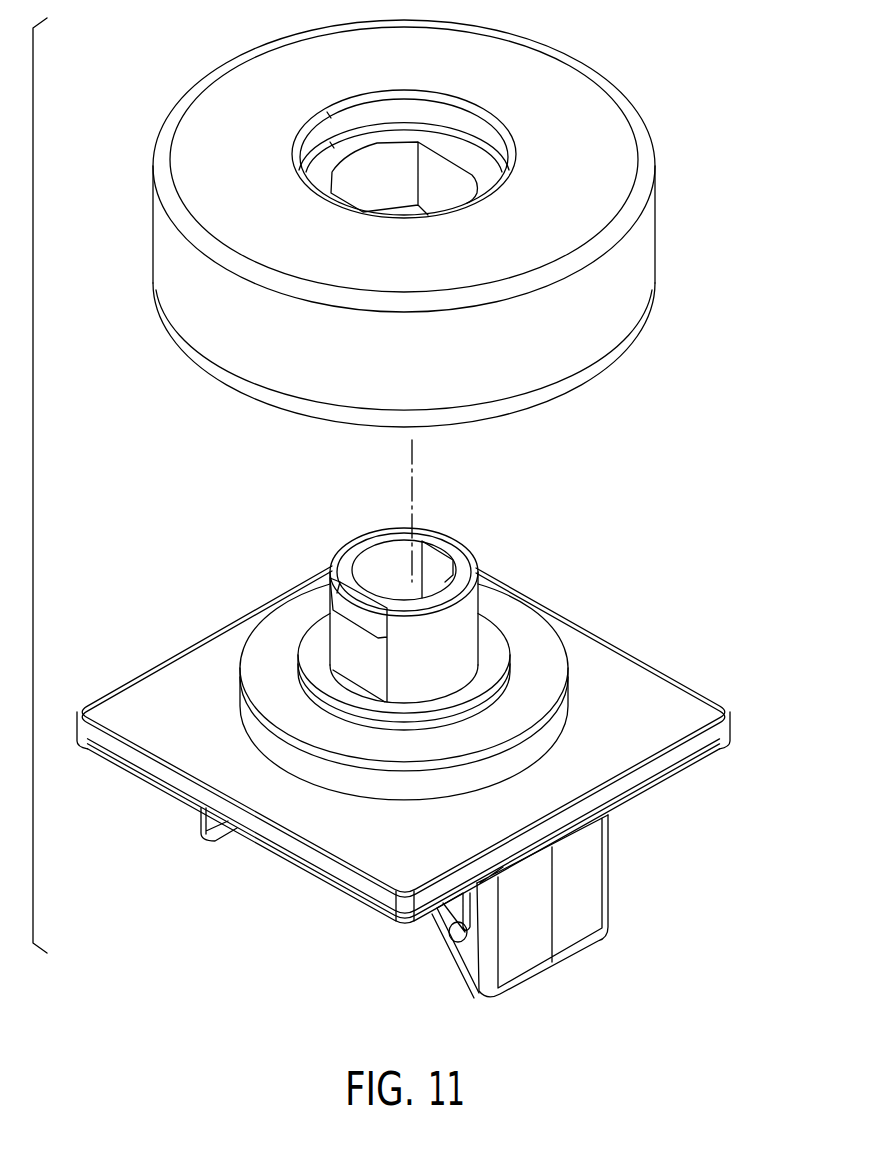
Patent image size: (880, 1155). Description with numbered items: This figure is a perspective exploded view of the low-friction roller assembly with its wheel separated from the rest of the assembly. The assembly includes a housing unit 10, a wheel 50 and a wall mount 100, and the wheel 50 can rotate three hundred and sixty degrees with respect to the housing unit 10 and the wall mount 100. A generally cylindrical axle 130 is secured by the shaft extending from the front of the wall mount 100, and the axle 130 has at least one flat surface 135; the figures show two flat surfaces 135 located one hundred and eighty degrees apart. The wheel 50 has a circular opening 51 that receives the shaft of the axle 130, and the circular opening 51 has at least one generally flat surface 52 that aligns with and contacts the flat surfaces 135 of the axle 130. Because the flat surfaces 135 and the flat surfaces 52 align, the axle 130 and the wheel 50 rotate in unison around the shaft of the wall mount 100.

The wheel 50 is at (638, 258).
The circular opening 51 is at (368, 165).
The generally flat surface 52 is at (450, 180).
The wall mount 100 is at (640, 683).
The housing unit 10 is at (537, 735).
The axle 130 is at (470, 616).
The flat surface 135 is at (338, 627).